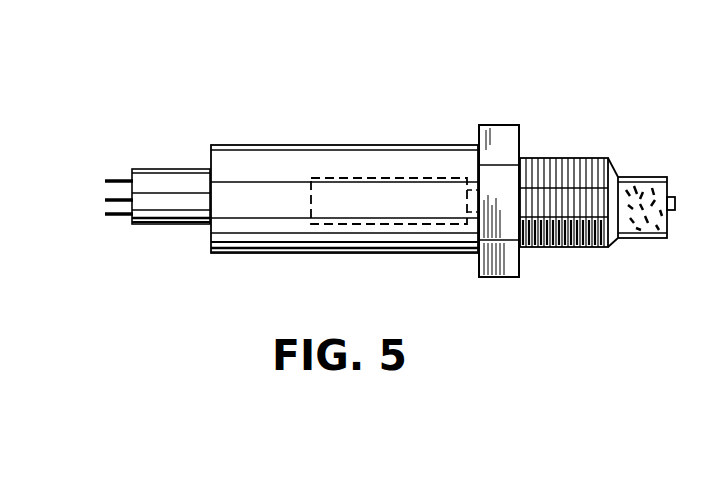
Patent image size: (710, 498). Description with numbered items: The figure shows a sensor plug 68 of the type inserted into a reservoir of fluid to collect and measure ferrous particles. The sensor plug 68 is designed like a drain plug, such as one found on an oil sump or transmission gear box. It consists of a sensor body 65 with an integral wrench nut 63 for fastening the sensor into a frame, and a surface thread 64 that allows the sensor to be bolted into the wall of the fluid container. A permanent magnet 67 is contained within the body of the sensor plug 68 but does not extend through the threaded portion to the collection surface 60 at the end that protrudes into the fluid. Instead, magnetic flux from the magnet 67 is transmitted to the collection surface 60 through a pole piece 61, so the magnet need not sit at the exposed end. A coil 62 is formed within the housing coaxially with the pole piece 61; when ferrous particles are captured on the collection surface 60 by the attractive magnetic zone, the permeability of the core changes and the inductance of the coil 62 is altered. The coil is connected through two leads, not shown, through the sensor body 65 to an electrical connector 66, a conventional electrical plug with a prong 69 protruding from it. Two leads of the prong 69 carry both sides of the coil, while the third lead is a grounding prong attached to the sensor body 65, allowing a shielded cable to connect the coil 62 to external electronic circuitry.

The collection surface 60 is at (676, 200).
The pole piece 61 is at (546, 167).
The coil 62 is at (638, 178).
The wrench nut 63 is at (493, 128).
The surface thread 64 is at (569, 205).
The sensor body 65 is at (347, 254).
The electrical connector 66 is at (166, 181).
The magnet 67 is at (390, 195).
The sensor plug 68 is at (344, 174).
The prong 69 is at (105, 200).